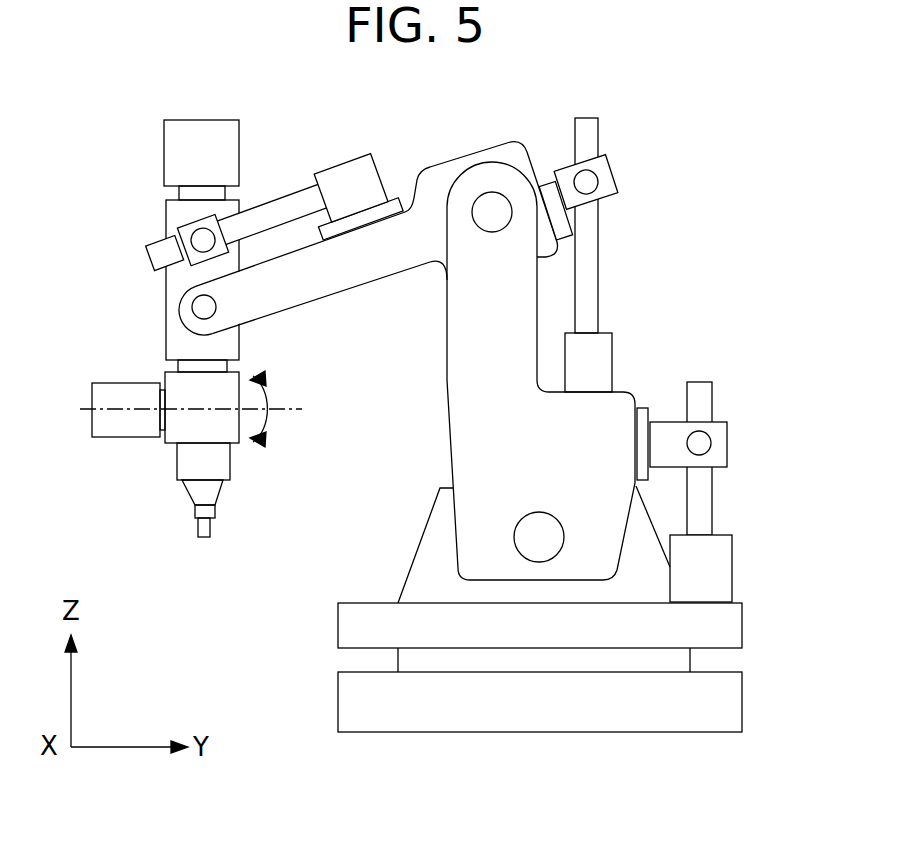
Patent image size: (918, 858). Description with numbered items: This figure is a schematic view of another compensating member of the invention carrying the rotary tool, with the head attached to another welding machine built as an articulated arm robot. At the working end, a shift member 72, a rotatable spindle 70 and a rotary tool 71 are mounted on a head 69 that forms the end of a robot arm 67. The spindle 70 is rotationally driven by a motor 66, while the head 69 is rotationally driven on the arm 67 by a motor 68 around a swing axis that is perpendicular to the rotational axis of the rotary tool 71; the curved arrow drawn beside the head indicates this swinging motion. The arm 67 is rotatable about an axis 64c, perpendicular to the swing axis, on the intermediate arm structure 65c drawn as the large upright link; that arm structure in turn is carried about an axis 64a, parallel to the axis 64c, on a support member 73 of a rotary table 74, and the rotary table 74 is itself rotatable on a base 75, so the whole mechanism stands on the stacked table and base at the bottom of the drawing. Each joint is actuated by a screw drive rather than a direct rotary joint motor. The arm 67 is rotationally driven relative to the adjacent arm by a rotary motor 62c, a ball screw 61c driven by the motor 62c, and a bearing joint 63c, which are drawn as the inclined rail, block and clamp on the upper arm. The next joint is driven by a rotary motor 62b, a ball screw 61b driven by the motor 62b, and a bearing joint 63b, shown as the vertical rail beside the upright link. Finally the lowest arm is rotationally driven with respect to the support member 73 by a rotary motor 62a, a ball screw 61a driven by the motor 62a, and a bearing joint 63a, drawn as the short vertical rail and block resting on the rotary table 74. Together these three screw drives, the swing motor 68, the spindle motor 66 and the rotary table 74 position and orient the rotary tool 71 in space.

The ball screw 61a is at (708, 492).
The ball screw 61b is at (600, 257).
The ball screw 61c is at (275, 213).
The rotary motor 62a is at (720, 562).
The rotary motor 62b is at (605, 350).
The rotary motor 62c is at (348, 170).
The bearing joint 63a is at (727, 435).
The bearing joint 63b is at (607, 167).
The bearing joint 63c is at (182, 225).
The axis 64a is at (543, 528).
The axis 64c is at (200, 310).
The arm 65c is at (502, 158).
The motor 66 is at (180, 145).
The robot arm 67 is at (180, 278).
The motor 68 is at (98, 418).
The head 69 is at (232, 438).
The rotatable spindle 70 is at (195, 493).
The rotary tool 71 is at (200, 530).
The shift member 72 is at (185, 463).
The support member 73 is at (427, 548).
The rotary table 74 is at (740, 628).
The base 75 is at (740, 698).